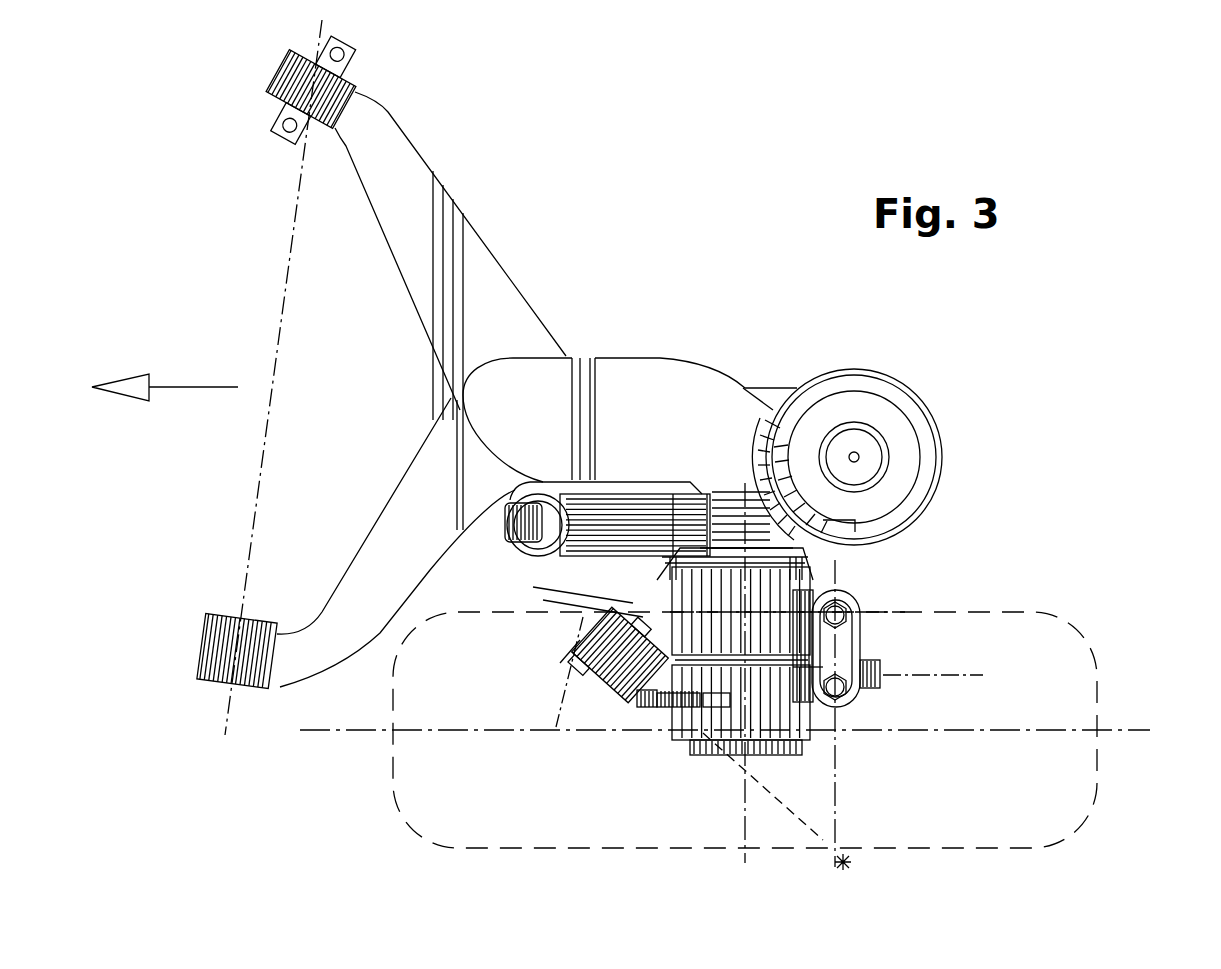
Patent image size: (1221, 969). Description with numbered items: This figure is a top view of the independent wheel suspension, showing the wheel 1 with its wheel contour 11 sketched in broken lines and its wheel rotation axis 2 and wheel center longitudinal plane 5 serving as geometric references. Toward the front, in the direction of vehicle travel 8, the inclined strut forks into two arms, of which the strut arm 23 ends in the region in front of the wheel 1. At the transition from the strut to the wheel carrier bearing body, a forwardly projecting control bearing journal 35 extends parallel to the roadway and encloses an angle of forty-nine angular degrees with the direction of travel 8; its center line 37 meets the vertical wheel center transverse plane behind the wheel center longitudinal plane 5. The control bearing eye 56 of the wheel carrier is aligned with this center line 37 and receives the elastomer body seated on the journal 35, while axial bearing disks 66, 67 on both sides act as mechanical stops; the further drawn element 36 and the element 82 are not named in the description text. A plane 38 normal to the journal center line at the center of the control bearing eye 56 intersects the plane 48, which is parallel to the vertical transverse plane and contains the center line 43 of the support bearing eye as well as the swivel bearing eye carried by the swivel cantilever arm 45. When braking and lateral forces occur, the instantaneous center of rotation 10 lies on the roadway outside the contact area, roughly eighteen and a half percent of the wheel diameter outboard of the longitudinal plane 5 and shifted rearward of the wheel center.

The wheel 1 is at (393, 750).
The wheel contour 11 is at (524, 354).
The wheel rotation axis 2 is at (747, 822).
The wheel center longitudinal plane 5 is at (1078, 730).
The direction of vehicle travel 8 is at (174, 404).
The instantaneous center of rotation 10 is at (862, 868).
The strut arm 23 is at (298, 659).
The control bearing journal 35 is at (533, 587).
The bearing 36 is at (598, 697).
The center line 37 is at (553, 737).
The plane 38 is at (767, 788).
The center line 43 is at (928, 675).
The swivel cantilever arm 45 is at (770, 603).
The plane 48 is at (833, 780).
The control bearing eye 56 is at (625, 700).
The axial bearing disk 66 is at (543, 600).
The axial bearing disk 67 is at (625, 705).
The nut 82 is at (770, 677).